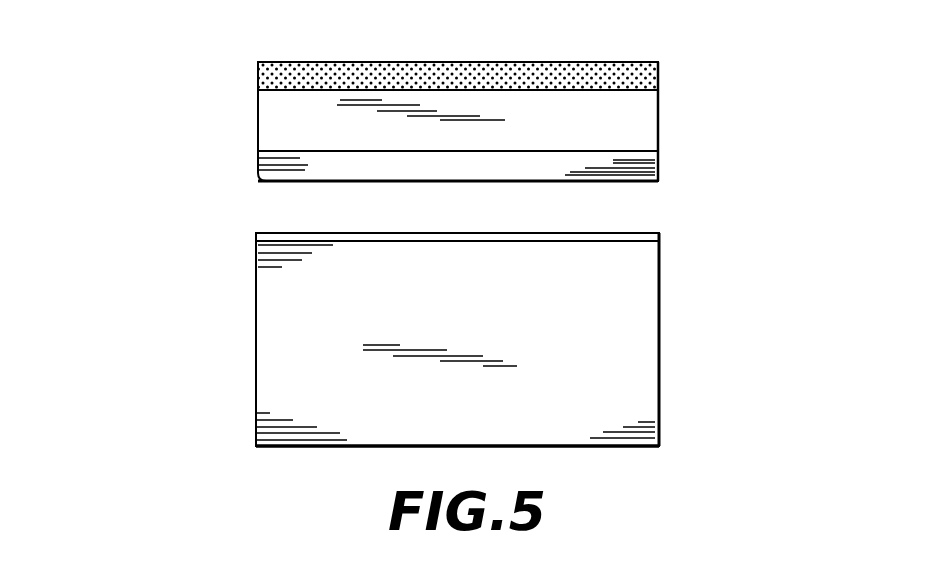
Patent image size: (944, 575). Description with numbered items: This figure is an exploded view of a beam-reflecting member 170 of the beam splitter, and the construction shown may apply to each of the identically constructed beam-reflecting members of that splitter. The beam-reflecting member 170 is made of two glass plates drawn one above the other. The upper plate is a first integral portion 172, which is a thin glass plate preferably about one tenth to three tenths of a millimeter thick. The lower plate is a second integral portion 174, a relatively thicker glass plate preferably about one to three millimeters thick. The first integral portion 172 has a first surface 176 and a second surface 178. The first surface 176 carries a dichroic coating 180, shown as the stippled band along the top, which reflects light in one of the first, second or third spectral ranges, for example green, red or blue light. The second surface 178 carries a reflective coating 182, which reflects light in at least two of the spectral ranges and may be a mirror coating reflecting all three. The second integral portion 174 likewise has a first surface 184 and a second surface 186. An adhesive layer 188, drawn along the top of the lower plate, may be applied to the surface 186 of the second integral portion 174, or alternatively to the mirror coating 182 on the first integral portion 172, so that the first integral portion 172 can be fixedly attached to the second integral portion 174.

The beam-reflecting member 170 is at (182, 100).
The first integral portion 172 is at (647, 135).
The second integral portion 174 is at (643, 352).
The first surface 176 is at (636, 91).
The second surface 178 is at (612, 152).
The dichroic coating 180 is at (390, 69).
The reflective coating 182 is at (263, 165).
The first surface 184 is at (277, 232).
The second surface 186 is at (360, 447).
The adhesive layer 188 is at (665, 240).